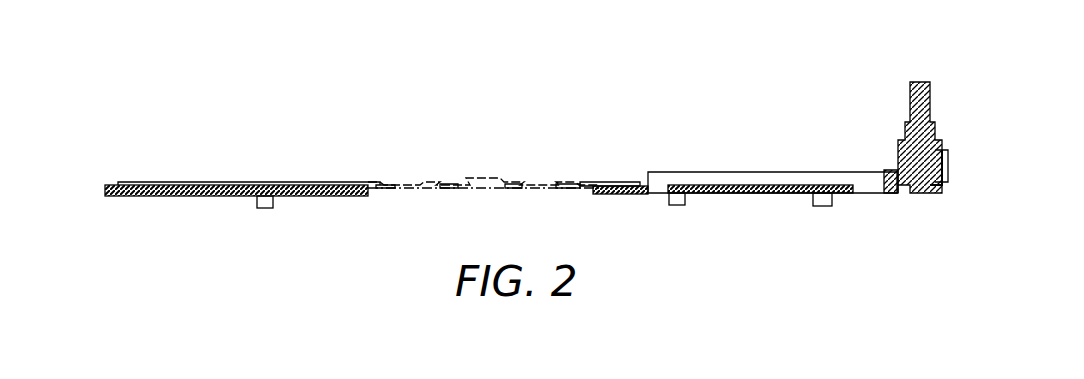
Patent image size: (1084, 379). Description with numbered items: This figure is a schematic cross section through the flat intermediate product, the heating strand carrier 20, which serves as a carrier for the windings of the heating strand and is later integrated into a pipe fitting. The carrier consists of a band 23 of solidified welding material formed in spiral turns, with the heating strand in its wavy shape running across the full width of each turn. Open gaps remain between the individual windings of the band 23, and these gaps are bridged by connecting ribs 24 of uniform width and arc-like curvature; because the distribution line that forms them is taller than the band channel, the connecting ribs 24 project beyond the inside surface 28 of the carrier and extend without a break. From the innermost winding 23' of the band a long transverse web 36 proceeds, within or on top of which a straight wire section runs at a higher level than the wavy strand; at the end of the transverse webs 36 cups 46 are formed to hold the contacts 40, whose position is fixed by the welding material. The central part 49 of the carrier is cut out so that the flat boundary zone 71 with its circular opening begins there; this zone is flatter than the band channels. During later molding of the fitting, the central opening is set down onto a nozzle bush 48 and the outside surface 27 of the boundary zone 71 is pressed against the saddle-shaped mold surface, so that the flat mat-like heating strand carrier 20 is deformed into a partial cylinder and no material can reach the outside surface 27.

The heating strand carrier 20 is at (367, 126).
The band 23 is at (548, 233).
The innermost winding of the band 23' is at (683, 230).
The connecting ribs 24 is at (275, 183).
The outside surface 27 is at (396, 197).
The inside surface 28 is at (330, 183).
The transverse webs 36 is at (873, 180).
The contacts 40 is at (918, 88).
The cups 46 is at (938, 150).
The nozzle bush 48 is at (597, 192).
The central part 49 is at (625, 183).
The flat boundary zone 71 is at (618, 194).